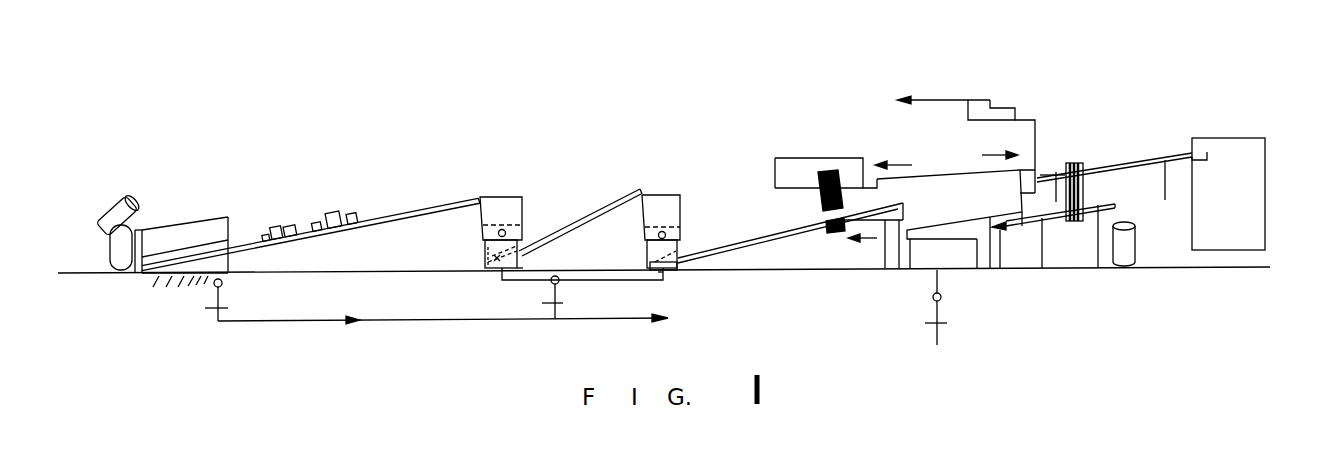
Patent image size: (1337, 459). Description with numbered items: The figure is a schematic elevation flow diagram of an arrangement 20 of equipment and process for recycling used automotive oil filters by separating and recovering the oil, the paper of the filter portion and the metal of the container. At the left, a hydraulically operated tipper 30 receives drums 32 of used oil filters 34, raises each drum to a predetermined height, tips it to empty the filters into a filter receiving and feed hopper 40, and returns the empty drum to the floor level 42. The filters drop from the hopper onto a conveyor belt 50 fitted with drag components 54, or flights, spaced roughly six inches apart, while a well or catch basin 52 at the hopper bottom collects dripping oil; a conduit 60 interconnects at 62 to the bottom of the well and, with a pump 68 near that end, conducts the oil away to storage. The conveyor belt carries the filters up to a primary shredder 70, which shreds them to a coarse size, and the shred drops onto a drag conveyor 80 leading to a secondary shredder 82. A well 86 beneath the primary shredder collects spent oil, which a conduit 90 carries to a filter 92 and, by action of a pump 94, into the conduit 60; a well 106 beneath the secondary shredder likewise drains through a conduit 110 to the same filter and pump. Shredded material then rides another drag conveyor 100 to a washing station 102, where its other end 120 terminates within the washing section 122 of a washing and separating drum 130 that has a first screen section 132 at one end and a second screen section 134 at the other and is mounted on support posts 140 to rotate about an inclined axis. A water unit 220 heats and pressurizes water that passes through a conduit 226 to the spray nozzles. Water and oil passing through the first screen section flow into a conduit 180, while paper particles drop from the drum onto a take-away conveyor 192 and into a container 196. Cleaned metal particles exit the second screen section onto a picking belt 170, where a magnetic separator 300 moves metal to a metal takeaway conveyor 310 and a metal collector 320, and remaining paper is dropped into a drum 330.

The arrangement of equipment and process 20 is at (992, 46).
The tipper 30 is at (108, 275).
The drum 32 is at (110, 202).
The used automotive oil filter 34 is at (130, 203).
The filter receiving and feed hopper 40 is at (233, 206).
The ground or floor level 42 is at (177, 283).
The conveyor belt 50 is at (340, 227).
The well or catch basin 52 is at (217, 263).
The drag components 54 is at (322, 220).
The conduit 60 is at (220, 295).
The conduit end connection 62 is at (220, 275).
The pump 68 is at (217, 288).
The primary shredder 70 is at (516, 185).
The drag conveyor 80 is at (595, 217).
The secondary shredder 82 is at (677, 178).
The well or tank 86 is at (483, 263).
The conduit 90 is at (505, 282).
The filter 92 is at (522, 263).
The pump 94 is at (543, 320).
The drag conveyor 100 is at (762, 255).
The washing station 102 is at (875, 85).
The well 106 is at (678, 263).
The conduit 110 is at (657, 277).
The other end of drag conveyor 120 is at (900, 270).
The washing section 122 is at (941, 156).
The washing and separating drum 130 is at (967, 270).
The first screen section 132 is at (853, 224).
The second screen section 134 is at (1025, 222).
The support posts 140 is at (883, 258).
The picking belt 170 is at (1005, 232).
The conduit 180 is at (1053, 223).
The take-away conveyor 192 is at (817, 199).
The drum or container 196 is at (792, 158).
The water unit 220 is at (1003, 91).
The conduit 226 is at (1038, 120).
The magnetic separator 300 is at (1085, 182).
The metal takeaway conveyor 310 is at (1207, 157).
The metal collector 320 is at (1257, 177).
The drum 330 is at (1133, 267).